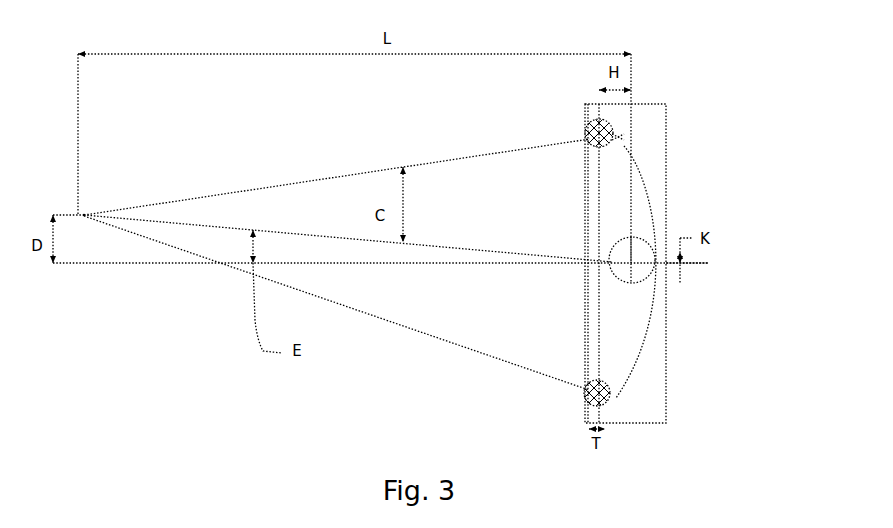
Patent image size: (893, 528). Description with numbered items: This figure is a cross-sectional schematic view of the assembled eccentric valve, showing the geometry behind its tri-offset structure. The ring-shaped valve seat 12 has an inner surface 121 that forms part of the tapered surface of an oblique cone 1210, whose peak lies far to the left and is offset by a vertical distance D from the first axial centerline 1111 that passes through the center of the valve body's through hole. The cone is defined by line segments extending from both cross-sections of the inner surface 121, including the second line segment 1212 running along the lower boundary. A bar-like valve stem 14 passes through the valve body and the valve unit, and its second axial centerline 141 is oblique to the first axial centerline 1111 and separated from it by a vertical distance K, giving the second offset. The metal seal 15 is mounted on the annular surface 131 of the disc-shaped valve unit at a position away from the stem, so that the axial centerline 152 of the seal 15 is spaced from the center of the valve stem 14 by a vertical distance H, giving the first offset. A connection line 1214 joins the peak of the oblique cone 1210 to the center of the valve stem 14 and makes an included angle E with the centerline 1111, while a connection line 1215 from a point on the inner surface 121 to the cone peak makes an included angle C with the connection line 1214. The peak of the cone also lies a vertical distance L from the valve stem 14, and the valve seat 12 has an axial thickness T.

The oblique cone 1210 is at (115, 172).
The connection line 1215 is at (292, 182).
The connection line 1214 is at (198, 221).
The second line segment 1212 is at (393, 325).
The axial centerline of the seal 152 is at (612, 250).
The valve seat 12 is at (584, 130).
The inner surface 121 is at (620, 136).
The annular surface 131 is at (620, 137).
The seal 15 is at (676, 266).
The second axial centerline 141 is at (628, 246).
The valve stem 14 is at (589, 269).
The first axial centerline 1111 is at (713, 312).